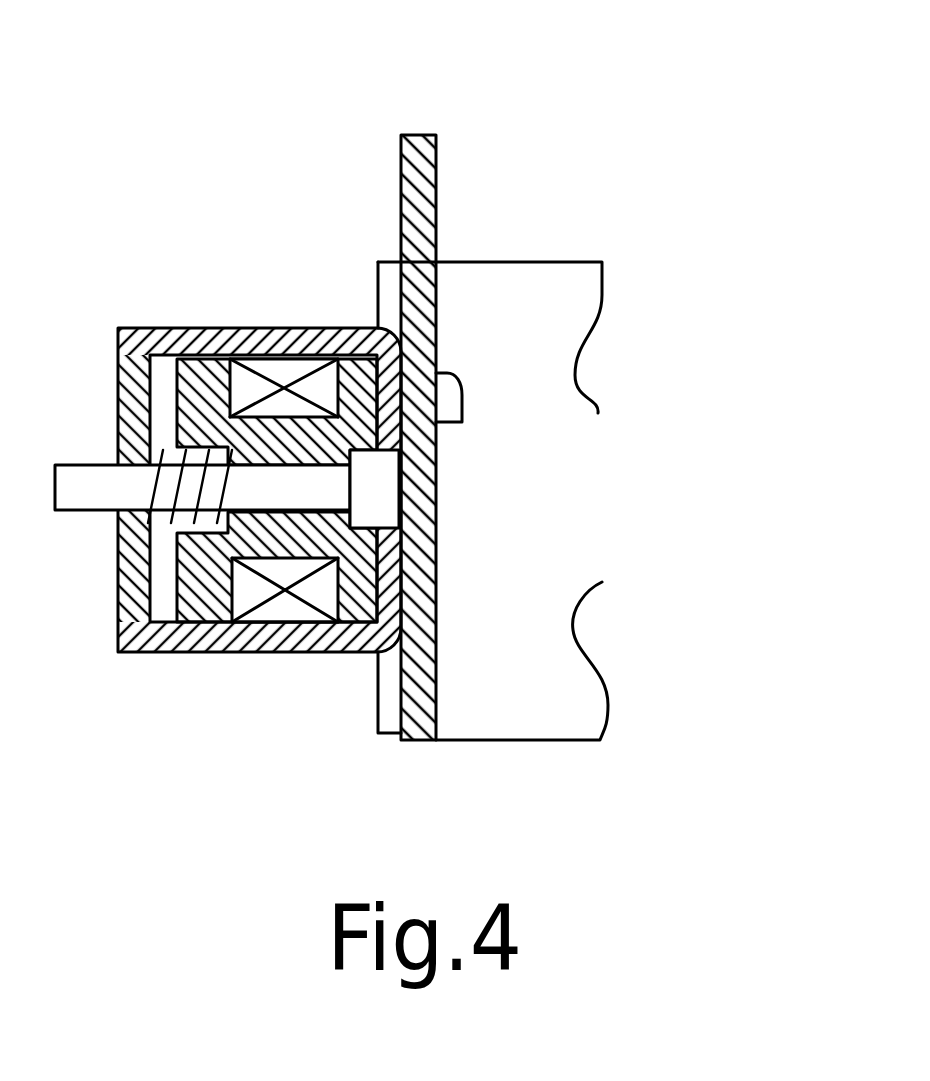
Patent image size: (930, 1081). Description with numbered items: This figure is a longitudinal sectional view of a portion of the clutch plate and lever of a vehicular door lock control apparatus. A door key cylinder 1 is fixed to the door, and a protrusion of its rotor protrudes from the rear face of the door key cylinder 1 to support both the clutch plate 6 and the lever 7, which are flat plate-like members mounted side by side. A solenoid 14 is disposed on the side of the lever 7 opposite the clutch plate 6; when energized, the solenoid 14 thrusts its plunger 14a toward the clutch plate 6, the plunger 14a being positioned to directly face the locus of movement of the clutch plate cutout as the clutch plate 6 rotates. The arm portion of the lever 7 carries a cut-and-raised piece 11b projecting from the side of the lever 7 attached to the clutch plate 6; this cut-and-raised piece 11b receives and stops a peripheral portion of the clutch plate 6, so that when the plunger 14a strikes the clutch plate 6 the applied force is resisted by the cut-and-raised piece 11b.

The door key cylinder 1 is at (560, 260).
The clutch plate 6 is at (413, 135).
The lever 7 is at (377, 293).
The cut-and-raised piece 11b is at (463, 408).
The solenoid 14 is at (193, 328).
The plunger 14a is at (380, 498).